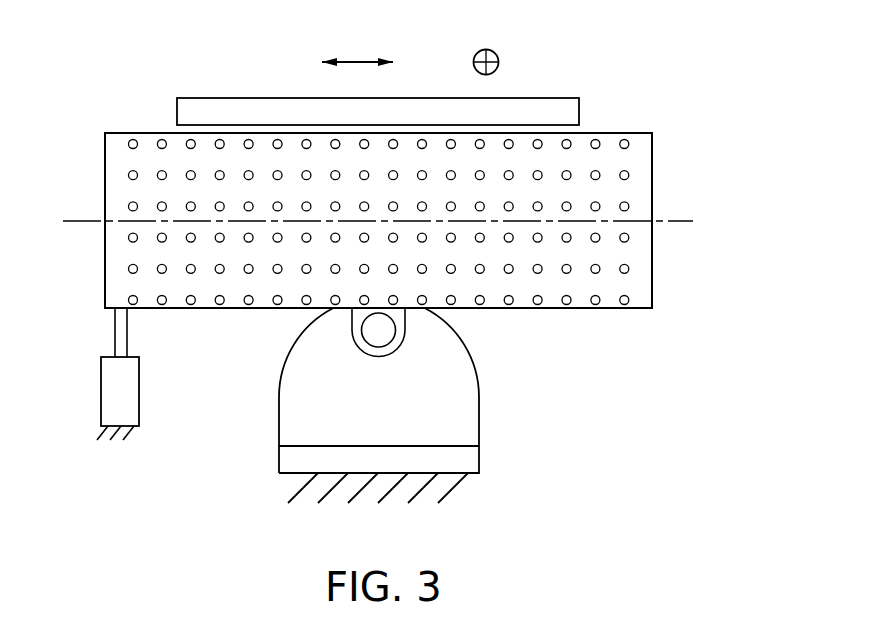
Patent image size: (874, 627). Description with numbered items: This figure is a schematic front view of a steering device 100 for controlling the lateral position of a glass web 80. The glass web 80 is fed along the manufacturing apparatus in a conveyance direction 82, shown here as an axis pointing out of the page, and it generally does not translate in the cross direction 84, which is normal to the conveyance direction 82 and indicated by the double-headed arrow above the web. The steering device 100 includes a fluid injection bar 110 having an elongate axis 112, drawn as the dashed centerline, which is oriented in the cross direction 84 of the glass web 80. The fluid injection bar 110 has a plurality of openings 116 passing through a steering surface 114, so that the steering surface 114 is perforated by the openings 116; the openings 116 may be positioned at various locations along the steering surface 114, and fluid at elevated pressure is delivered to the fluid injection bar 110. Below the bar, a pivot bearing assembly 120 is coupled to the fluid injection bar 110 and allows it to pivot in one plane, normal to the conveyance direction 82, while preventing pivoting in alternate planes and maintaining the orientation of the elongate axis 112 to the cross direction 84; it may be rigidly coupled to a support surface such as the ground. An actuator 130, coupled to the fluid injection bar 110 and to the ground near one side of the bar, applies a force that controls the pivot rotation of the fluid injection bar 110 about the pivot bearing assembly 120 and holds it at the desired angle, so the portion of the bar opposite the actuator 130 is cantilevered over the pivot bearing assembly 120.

The glass web 80 is at (579, 108).
The conveyance direction 82 is at (497, 54).
The cross direction 84 is at (357, 62).
The steering device 100 is at (682, 181).
The fluid injection bar 110 is at (665, 285).
The elongate axis 112 is at (75, 221).
The steering surface 114 is at (105, 282).
The openings 116 is at (191, 305).
The pivot bearing assembly 120 is at (479, 417).
The actuator 130 is at (100, 392).